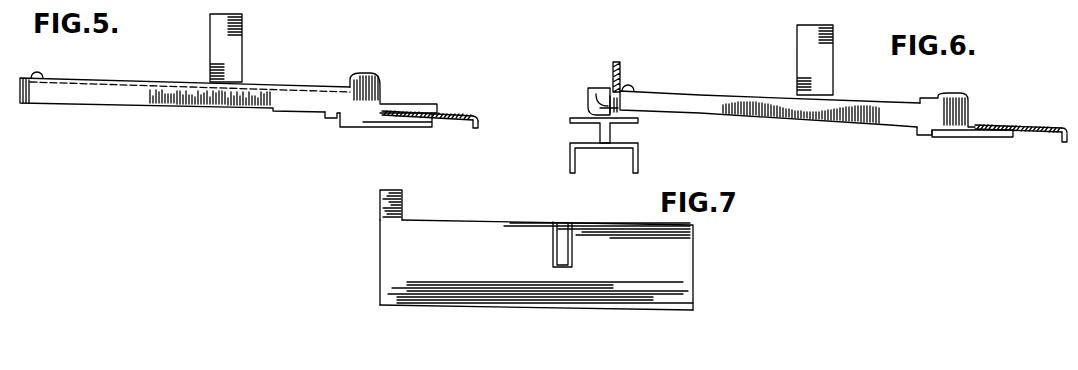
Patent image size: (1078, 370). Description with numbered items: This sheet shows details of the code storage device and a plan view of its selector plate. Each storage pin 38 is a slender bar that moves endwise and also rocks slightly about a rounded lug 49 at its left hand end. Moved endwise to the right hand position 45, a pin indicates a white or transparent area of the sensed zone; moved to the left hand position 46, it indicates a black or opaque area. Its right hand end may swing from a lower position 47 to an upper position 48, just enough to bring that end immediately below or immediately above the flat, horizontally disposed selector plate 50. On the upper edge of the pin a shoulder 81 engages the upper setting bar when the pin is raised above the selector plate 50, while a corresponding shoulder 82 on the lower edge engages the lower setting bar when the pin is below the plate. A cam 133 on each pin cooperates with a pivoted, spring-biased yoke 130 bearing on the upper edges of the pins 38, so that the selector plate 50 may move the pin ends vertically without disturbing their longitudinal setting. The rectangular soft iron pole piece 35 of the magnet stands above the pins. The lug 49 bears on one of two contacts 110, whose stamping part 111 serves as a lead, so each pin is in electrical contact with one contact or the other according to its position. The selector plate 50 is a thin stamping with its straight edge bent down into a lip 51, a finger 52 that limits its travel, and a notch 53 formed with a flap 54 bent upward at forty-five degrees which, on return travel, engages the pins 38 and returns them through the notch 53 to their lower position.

In FIG. 5, the soft iron pole piece 35 is at (217, 53).
In FIG. 6, the soft iron pole piece 35 is at (808, 63).
In FIG. 5, the pin 38 is at (286, 95).
In FIG. 6, the pin 38 is at (862, 107).
In FIG. 6, the right hand position 45 is at (592, 92).
In FIG. 6, the left hand position 46 is at (588, 103).
In FIG. 5, the lower position 47 is at (433, 127).
In FIG. 6, the lower position 47 is at (1017, 137).
In FIG. 5, the upper position 48 is at (432, 107).
In FIG. 5, the rounded lug 49 is at (25, 104).
In FIG. 6, the rounded lug 49 is at (620, 112).
In FIG. 5, the selector plate 50 is at (450, 112).
In FIG. 6, the selector plate 50 is at (1037, 125).
In FIG. 7, the selector plate 50 is at (536, 265).
In FIG. 5, the lip 51 is at (480, 125).
In FIG. 6, the lip 51 is at (1067, 127).
In FIG. 7, the lip 51 is at (668, 303).
In FIG. 7, the finger 52 is at (390, 207).
In FIG. 7, the notch 53 is at (553, 222).
In FIG. 7, the flap 54 is at (563, 243).
In FIG. 5, the shoulder 81 is at (352, 76).
In FIG. 6, the shoulder 81 is at (922, 98).
In FIG. 5, the shoulder 82 is at (327, 118).
In FIG. 6, the shoulder 82 is at (908, 130).
In FIG. 6, the contact 110 is at (570, 122).
In FIG. 6, the lead part of contact stamping 111 is at (633, 163).
In FIG. 6, the yoke 130 is at (622, 63).
In FIG. 5, the cam 133 is at (45, 76).
In FIG. 6, the cam 133 is at (610, 87).